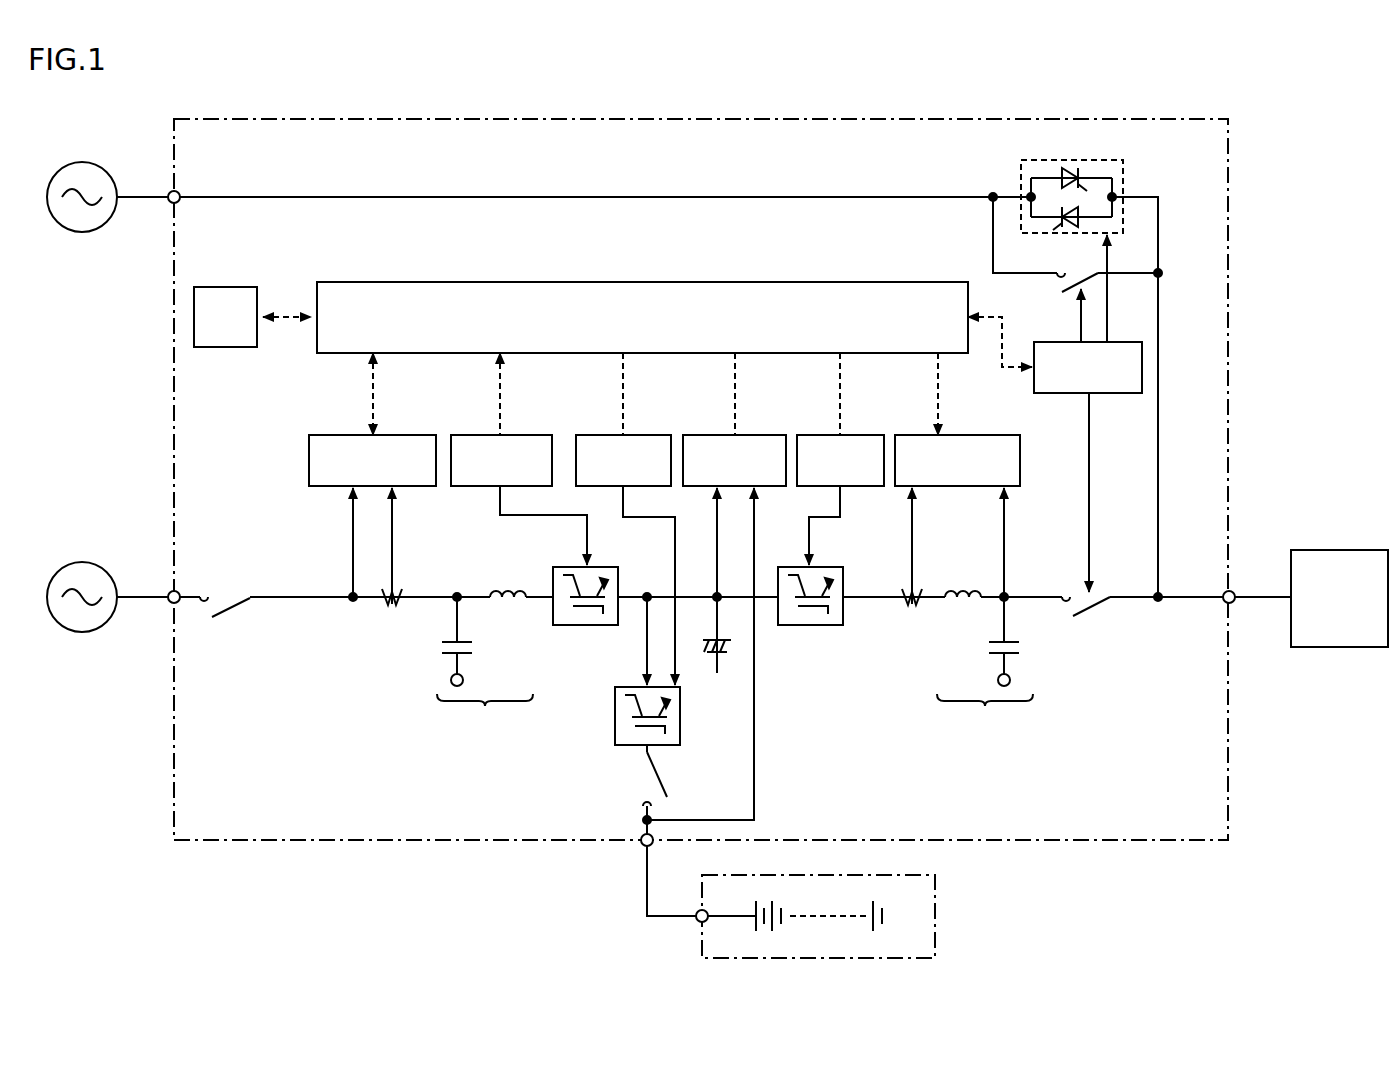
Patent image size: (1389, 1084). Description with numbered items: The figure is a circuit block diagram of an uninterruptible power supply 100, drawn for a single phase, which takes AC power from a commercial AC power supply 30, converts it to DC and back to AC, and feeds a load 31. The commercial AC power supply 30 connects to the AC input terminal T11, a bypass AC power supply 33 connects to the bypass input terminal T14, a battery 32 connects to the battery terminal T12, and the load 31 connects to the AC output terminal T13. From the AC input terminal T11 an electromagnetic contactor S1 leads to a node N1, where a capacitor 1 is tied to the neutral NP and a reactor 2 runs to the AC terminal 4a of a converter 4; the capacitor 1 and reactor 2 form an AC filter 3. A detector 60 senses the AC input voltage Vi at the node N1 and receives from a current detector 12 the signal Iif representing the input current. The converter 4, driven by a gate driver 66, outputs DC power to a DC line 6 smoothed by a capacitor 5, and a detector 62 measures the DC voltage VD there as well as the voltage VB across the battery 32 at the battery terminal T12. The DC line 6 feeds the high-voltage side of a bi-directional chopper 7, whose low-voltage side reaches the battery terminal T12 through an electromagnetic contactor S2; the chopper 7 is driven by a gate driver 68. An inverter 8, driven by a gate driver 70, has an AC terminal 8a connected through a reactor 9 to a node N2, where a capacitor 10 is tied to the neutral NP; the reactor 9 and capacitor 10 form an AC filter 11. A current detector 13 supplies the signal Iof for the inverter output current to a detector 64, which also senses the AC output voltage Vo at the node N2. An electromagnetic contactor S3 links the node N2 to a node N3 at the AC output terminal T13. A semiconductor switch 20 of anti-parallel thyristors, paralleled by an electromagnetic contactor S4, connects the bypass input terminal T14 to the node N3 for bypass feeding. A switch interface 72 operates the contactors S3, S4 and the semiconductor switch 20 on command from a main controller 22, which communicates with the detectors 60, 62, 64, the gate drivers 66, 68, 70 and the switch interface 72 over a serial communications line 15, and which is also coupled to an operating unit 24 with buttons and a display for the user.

The uninterruptible power supply 100 is at (208, 118).
The bypass AC power supply 33 is at (89, 163).
The commercial AC power supply 30 is at (90, 563).
The load 31 is at (1340, 550).
The battery 32 is at (890, 875).
The operating unit 24 is at (228, 287).
The main controller 22 is at (888, 282).
The semiconductor switch 20 is at (1085, 160).
The switch interface 72 is at (1128, 342).
The communications line 15 is at (370, 397).
The detector 60 is at (410, 435).
The detector 62 is at (760, 435).
The detector 64 is at (985, 435).
The gate driver 66 is at (540, 435).
The gate driver 68 is at (660, 435).
The gate driver 70 is at (867, 435).
The capacitor 1 is at (462, 642).
The reactor 2 is at (506, 588).
The AC filter 3 is at (485, 714).
The converter 4 is at (572, 566).
The AC terminal 4a is at (553, 606).
The capacitor 5 is at (714, 643).
The DC line 6 is at (647, 592).
The bi-directional chopper 7 is at (615, 717).
The inverter 8 is at (826, 566).
The AC terminal 8a is at (841, 606).
The reactor 9 is at (960, 588).
The capacitor 10 is at (1010, 642).
The AC filter 11 is at (985, 714).
The current detector 12 is at (385, 607).
The current detector 13 is at (921, 607).
The AC input terminal T11 is at (174, 590).
The battery terminal T12 is at (644, 850).
The AC output terminal T13 is at (1232, 590).
The bypass input terminal T14 is at (174, 190).
The electromagnetic contactor S1 is at (230, 610).
The electromagnetic contactor S2 is at (662, 780).
The electromagnetic contactor S3 is at (1091, 608).
The electromagnetic contactor S4 is at (1081, 282).
The node N1 is at (352, 592).
The node N2 is at (1006, 592).
The node N3 is at (1156, 592).
The neutral NP is at (464, 680).
The AC input voltage Vi is at (351, 530).
The signal Iif is at (394, 553).
The DC voltage VD is at (722, 600).
The voltage across the battery VB is at (755, 780).
The AC output voltage Vo is at (1006, 531).
The signal Iof is at (914, 531).